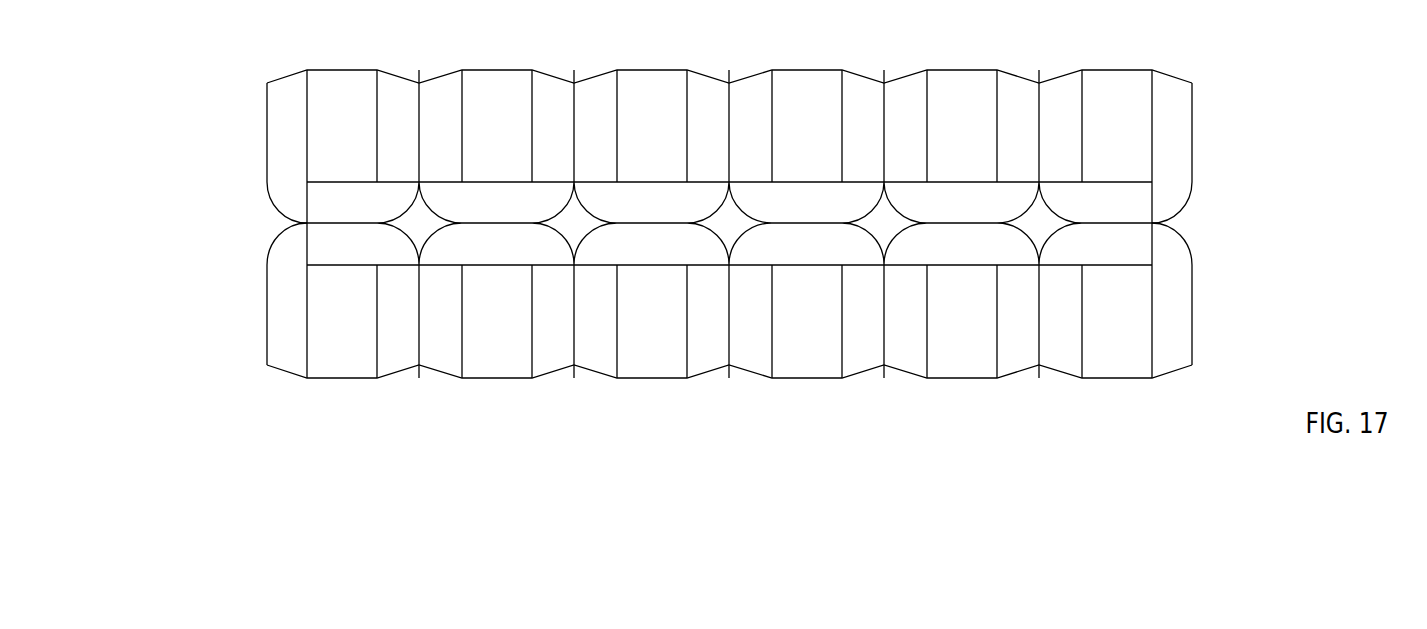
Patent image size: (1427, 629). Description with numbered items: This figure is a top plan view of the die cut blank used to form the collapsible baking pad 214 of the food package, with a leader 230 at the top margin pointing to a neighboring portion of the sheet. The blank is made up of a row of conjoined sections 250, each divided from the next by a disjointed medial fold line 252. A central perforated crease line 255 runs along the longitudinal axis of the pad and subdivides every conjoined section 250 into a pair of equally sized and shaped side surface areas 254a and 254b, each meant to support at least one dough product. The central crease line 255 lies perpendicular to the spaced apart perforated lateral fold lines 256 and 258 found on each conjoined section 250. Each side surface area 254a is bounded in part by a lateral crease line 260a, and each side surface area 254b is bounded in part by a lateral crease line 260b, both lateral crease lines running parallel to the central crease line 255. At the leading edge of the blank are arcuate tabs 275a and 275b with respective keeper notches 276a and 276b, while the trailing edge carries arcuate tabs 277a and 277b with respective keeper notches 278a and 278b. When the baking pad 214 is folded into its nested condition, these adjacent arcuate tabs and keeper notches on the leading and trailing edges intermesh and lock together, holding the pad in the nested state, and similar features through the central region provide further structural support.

The collapsible baking pad 214 is at (1203, 32).
The adjacent blank portion 230 is at (857, 0).
The conjoined section 250 is at (318, 380).
The disjointed medial fold line 252 is at (421, 109).
The side surface area 254a is at (332, 83).
The side surface area 254b is at (348, 350).
The central perforated crease line 255 is at (339, 222).
The perforated lateral fold line 256 is at (307, 100).
The perforated lateral fold line 258 is at (380, 112).
The lateral crease line 260a is at (340, 178).
The lateral crease line 260b is at (332, 267).
The arcuate tab 275a is at (287, 210).
The arcuate tab 275b is at (283, 242).
The keeper notch 276a is at (267, 182).
The keeper notch 276b is at (267, 263).
The arcuate tab 277a is at (1173, 214).
The arcuate tab 277b is at (1183, 237).
The keeper notch 278a is at (1192, 182).
The keeper notch 278b is at (1192, 266).